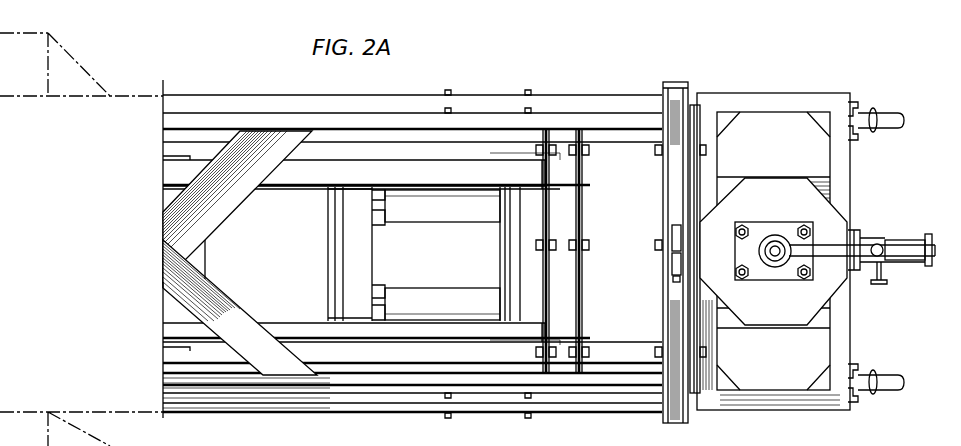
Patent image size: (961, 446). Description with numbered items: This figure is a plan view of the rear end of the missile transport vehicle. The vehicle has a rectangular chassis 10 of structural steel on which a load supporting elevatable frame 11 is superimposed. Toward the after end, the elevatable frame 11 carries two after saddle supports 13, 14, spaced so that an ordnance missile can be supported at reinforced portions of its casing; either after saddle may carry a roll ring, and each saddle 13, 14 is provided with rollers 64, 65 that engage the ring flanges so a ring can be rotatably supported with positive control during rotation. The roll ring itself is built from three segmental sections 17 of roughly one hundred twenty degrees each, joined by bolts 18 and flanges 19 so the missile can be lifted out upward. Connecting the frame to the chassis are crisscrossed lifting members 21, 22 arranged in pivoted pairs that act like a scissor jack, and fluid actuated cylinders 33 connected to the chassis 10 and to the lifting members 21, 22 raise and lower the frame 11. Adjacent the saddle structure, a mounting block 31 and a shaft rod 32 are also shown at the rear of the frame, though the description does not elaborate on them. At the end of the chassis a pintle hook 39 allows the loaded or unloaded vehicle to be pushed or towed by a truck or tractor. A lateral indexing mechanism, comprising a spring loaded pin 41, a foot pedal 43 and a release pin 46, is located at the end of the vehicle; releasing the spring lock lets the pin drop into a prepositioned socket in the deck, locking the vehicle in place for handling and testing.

The chassis 10 is at (222, 410).
The elevatable frame 11 is at (348, 118).
The after saddle support 13 is at (660, 375).
The after saddle support 14 is at (578, 306).
The segmental section 17 is at (676, 82).
The bolt 18 is at (672, 272).
The flange 19 is at (672, 246).
The lifting member 21 is at (400, 153).
The lifting member 22 is at (440, 178).
The mounting block 31 is at (775, 264).
The shaft rod 32 is at (832, 254).
The fluid actuated cylinder 33 is at (447, 213).
The pintle hook 39 is at (893, 130).
The spring loaded pin 41 is at (877, 243).
The foot pedal 43 is at (924, 237).
The release pin 46 is at (880, 285).
The roller 64 is at (577, 243).
The roller 65 is at (574, 156).